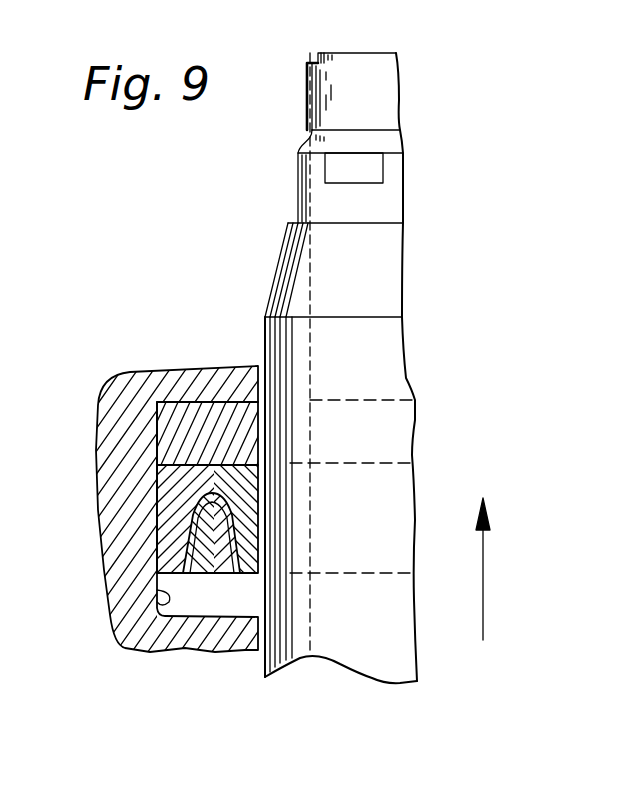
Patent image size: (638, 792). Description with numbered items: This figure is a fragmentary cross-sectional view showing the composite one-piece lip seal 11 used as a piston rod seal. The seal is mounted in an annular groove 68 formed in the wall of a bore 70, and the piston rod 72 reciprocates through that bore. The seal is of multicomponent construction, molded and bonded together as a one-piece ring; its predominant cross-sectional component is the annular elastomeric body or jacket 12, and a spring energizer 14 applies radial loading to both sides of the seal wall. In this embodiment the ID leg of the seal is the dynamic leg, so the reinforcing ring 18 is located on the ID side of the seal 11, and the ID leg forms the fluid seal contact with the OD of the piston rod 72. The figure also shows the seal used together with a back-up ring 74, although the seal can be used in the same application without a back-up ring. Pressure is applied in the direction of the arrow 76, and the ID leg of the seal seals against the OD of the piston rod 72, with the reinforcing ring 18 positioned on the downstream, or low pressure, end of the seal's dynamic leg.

The composite one-piece lip seal 11 is at (160, 516).
The annular elastomeric body 12 is at (257, 567).
The spring energizer 14 is at (157, 560).
The reinforcing ring 18 is at (257, 470).
The annular groove 68 is at (112, 617).
The bore 70 is at (257, 377).
The piston rod 72 is at (394, 428).
The back-up ring 74 is at (192, 406).
The arrow 76 is at (486, 566).